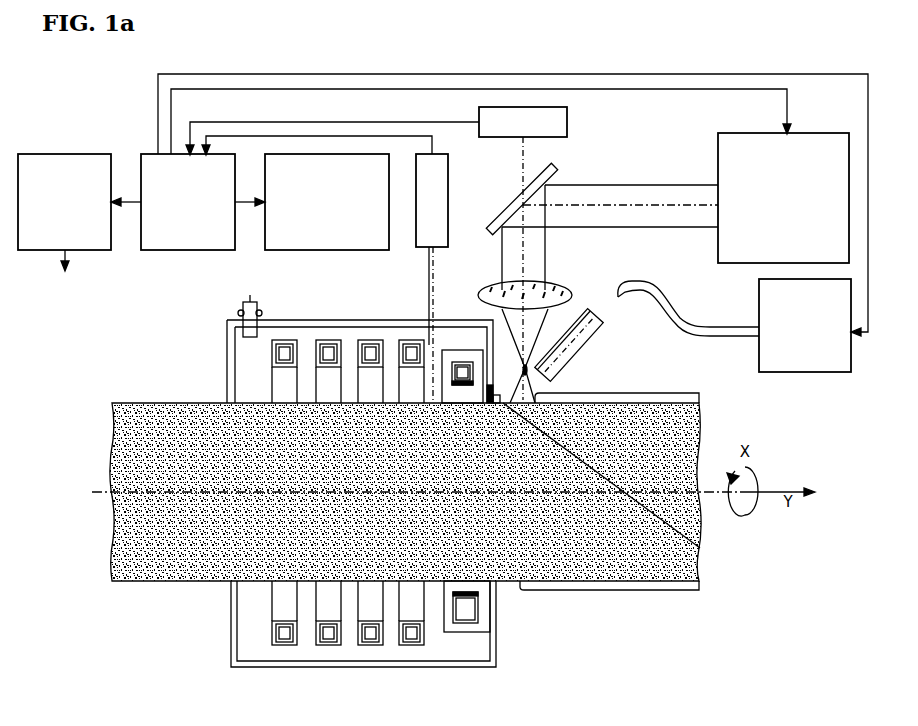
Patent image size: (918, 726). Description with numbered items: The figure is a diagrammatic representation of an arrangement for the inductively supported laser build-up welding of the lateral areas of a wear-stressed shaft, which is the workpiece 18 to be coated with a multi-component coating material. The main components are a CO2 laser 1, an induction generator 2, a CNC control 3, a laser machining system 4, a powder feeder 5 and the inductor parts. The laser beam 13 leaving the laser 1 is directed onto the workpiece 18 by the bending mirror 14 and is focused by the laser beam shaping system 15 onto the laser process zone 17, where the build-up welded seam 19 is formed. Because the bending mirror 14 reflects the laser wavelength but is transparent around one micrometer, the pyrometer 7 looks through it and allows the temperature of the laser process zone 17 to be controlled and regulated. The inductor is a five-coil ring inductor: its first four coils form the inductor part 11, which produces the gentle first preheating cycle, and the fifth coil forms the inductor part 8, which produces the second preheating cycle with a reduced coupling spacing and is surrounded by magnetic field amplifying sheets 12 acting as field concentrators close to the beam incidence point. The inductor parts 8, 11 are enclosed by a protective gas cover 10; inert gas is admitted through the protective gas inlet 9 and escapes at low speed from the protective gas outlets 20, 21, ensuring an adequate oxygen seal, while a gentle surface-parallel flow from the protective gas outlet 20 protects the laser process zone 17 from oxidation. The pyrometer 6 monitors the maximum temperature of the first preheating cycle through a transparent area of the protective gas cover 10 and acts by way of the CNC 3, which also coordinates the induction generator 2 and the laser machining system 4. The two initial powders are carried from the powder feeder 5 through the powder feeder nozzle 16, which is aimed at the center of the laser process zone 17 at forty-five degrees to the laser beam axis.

The CO2 laser 1 is at (783, 198).
The induction generator 2 is at (327, 202).
The CNC control 3 is at (489, 205).
The laser machining system 4 is at (64, 212).
The powder feeder 5 is at (734, 325).
The pyrometer for monitoring and regulating the inductive preheating 6 is at (432, 278).
The pyrometer for monitoring and regulating the coating process 7 is at (523, 253).
The inductor part I2 8 is at (462, 370).
The protective gas inlet 9 is at (243, 313).
The protective gas cover 10 is at (227, 335).
The inductor part I1 11 is at (283, 357).
The magnetic field amplifying sheet 12 is at (447, 381).
The laser beam 13 is at (658, 212).
The bending mirror 14 is at (500, 232).
The laser beam shaping system 15 is at (575, 299).
The powder feeder nozzle 16 is at (590, 338).
The laser process zone 17 is at (533, 403).
The workpiece 18 is at (672, 500).
The build-up welded seam 19 is at (690, 586).
The protective gas outlet 20 is at (700, 548).
The protective gas outlet 21 is at (230, 587).